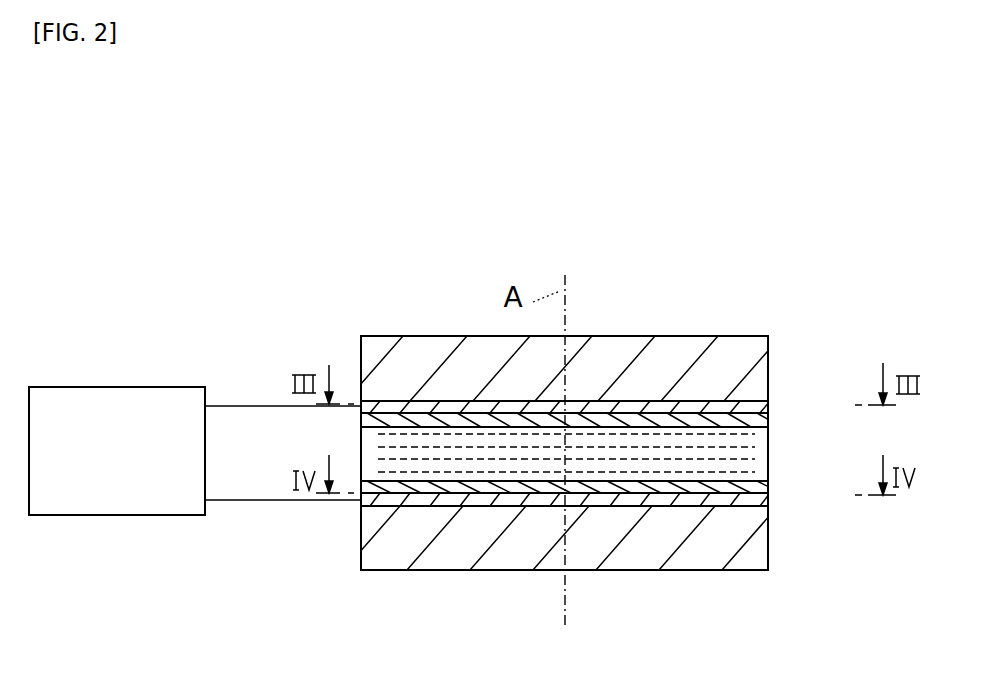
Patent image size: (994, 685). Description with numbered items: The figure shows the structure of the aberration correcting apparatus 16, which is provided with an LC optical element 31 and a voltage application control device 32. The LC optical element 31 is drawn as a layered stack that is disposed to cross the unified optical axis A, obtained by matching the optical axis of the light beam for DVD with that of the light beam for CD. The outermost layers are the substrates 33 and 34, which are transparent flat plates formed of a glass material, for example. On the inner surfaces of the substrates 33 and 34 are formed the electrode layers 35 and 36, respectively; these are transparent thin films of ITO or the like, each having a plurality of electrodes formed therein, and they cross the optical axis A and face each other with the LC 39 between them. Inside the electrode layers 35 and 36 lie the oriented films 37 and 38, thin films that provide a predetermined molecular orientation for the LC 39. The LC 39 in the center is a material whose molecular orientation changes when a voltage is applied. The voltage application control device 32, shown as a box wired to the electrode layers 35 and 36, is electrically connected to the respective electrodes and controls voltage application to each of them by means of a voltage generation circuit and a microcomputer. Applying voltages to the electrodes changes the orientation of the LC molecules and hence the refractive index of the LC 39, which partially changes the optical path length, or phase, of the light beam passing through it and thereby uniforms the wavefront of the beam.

The aberration correcting apparatus 16 is at (258, 284).
The LC optical element 31 is at (741, 323).
The voltage application control device 32 is at (143, 515).
The substrate 33 is at (645, 336).
The substrate 34 is at (642, 572).
The electrode layer 35 is at (768, 408).
The electrode layer 36 is at (768, 500).
The oriented film 37 is at (768, 421).
The oriented film 38 is at (768, 488).
The LC 39 is at (360, 432).